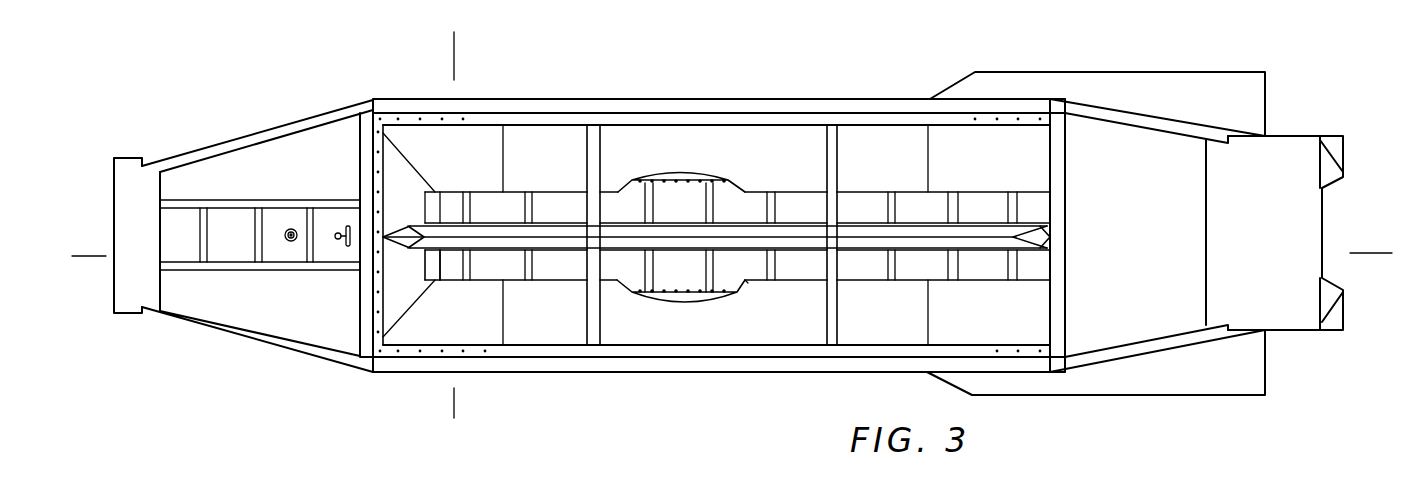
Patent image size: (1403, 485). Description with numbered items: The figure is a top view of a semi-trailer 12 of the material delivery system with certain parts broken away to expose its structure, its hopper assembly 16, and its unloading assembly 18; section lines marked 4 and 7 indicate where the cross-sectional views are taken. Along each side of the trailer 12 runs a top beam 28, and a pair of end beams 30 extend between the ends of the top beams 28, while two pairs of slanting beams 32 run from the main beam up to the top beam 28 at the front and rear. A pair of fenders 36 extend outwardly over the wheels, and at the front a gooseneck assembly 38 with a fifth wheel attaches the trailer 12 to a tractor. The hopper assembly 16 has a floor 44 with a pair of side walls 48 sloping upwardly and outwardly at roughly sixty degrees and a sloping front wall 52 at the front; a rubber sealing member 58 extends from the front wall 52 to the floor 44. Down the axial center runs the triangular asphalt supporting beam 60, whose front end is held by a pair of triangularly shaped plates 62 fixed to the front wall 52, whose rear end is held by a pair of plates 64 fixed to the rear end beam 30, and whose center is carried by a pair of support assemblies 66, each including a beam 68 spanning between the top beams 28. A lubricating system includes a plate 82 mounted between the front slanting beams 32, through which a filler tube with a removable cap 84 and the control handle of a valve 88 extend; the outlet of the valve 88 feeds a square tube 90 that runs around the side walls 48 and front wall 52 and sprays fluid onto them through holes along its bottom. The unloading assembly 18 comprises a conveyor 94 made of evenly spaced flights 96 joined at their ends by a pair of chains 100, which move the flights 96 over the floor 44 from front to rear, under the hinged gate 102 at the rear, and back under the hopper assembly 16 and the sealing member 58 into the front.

The semi-trailer 12 is at (212, 94).
The hopper assembly 16 is at (622, 110).
The unloading assembly 18 is at (755, 292).
The top beam 28 is at (779, 112).
The end beam 30 is at (362, 152).
The slanting beam 32 is at (287, 122).
The fender 36 is at (1258, 92).
The gooseneck assembly 38 is at (153, 330).
The floor 44 is at (562, 268).
The side wall 48 is at (680, 138).
The front wall 52 is at (394, 306).
The rubber sealing member 58 is at (433, 272).
The asphalt supporting beam 60 is at (716, 205).
The triangularly shaped plate 62 is at (393, 232).
The plate 64 is at (1040, 226).
The support assembly 66 is at (580, 156).
The beam 68 is at (603, 142).
The plate 82 is at (197, 163).
The removable cap 84 is at (286, 250).
The valve 88 is at (337, 250).
The square tube 90 is at (376, 178).
The conveyor 94 is at (853, 203).
The flight 96 is at (469, 208).
The chain 100 is at (690, 168).
The gate 102 is at (1332, 240).
The section line 4- 4 is at (86, 262).
The section line 7- 7 is at (446, 47).